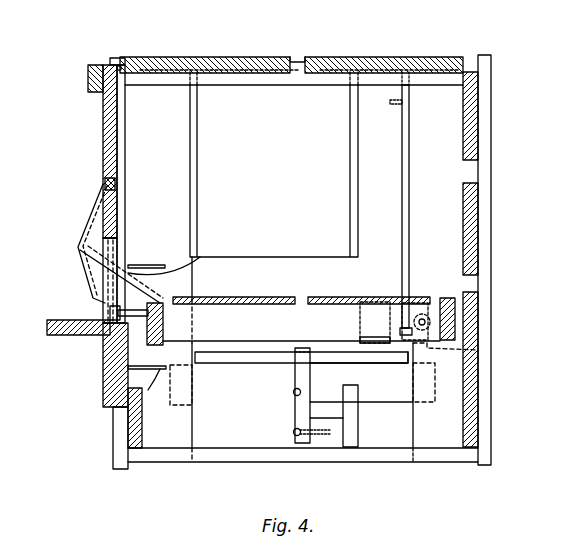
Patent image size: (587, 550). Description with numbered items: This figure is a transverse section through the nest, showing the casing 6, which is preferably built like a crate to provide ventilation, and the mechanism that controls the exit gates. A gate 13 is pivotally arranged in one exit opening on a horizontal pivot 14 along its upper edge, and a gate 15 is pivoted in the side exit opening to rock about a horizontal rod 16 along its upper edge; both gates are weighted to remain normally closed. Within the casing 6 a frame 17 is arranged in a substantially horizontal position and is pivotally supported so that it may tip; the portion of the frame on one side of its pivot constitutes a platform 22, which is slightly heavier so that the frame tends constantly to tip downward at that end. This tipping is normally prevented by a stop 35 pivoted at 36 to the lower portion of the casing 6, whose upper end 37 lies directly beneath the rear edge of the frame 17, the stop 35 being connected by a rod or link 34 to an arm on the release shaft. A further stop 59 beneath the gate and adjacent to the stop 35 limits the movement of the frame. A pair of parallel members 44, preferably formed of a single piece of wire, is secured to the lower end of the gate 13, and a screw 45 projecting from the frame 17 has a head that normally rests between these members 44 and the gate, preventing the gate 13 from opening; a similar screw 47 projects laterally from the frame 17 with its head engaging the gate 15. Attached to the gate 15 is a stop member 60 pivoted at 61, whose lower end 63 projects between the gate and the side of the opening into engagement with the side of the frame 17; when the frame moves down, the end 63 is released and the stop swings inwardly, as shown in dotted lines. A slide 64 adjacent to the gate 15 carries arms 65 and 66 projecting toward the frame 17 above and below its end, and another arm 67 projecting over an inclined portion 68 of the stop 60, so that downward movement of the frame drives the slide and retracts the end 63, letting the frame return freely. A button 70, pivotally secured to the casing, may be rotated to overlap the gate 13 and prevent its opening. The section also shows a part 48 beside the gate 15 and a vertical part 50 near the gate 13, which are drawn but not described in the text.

The casing 6 is at (470, 190).
The gate 13 is at (249, 249).
The pivot 14 is at (297, 60).
The gate 15 is at (103, 140).
The horizontal rod 16 is at (120, 66).
The frame 17 is at (455, 304).
The platform 22 is at (321, 297).
The rod or link 34 is at (302, 395).
The stop 35 is at (296, 372).
The pivot 36 is at (294, 432).
The upper end of stop 37 is at (295, 348).
The parallel members 44 is at (375, 334).
The screw 45 is at (381, 302).
The screw 47 is at (118, 313).
The lever 48 is at (110, 248).
The rod 50 is at (409, 143).
The stop 59 is at (357, 395).
The stop member 60 is at (90, 218).
The pivot 61 is at (105, 183).
The lower end of stop member 63 is at (105, 356).
The slide 64 is at (128, 368).
The arm 65 is at (125, 410).
The arm 66 is at (158, 262).
The arm 67 is at (200, 257).
The inclined portion 68 is at (128, 303).
The button 70 is at (478, 352).